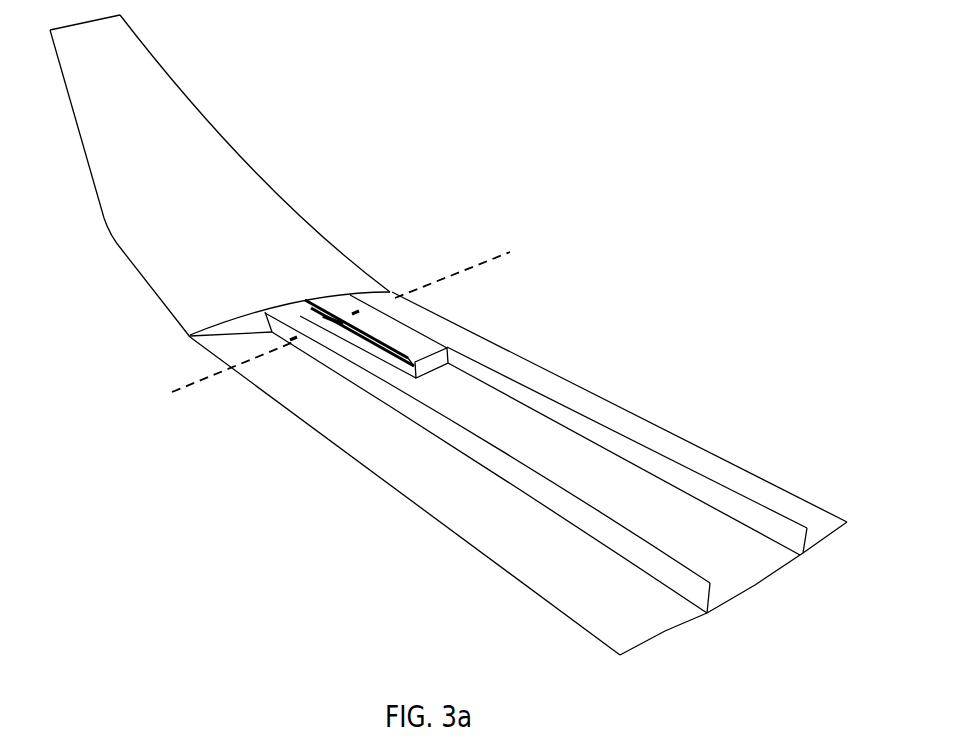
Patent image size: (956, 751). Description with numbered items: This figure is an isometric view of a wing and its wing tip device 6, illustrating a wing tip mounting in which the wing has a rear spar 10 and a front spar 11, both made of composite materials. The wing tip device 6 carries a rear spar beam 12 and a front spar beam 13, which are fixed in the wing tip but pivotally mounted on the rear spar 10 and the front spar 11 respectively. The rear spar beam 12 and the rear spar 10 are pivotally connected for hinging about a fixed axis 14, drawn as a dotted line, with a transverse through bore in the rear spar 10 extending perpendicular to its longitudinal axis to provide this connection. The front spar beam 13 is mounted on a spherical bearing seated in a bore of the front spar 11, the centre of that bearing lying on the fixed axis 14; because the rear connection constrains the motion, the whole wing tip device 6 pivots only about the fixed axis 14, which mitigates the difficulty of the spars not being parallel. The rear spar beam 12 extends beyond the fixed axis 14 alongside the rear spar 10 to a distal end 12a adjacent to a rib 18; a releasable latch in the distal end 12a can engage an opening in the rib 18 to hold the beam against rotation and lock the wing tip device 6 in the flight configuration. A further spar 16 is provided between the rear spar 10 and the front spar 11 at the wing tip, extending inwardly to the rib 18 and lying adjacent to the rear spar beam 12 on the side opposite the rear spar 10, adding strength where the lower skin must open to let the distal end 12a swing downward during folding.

The wing tip device 6 is at (200, 170).
The rear spar 10 is at (583, 515).
The front spar 11 is at (557, 417).
The rear spar beam 12 is at (333, 330).
The distal end 12a is at (386, 362).
The front spar beam 13 is at (368, 293).
The fixed axis 14 is at (200, 378).
The further spar 16 is at (400, 356).
The rib 18 is at (418, 367).